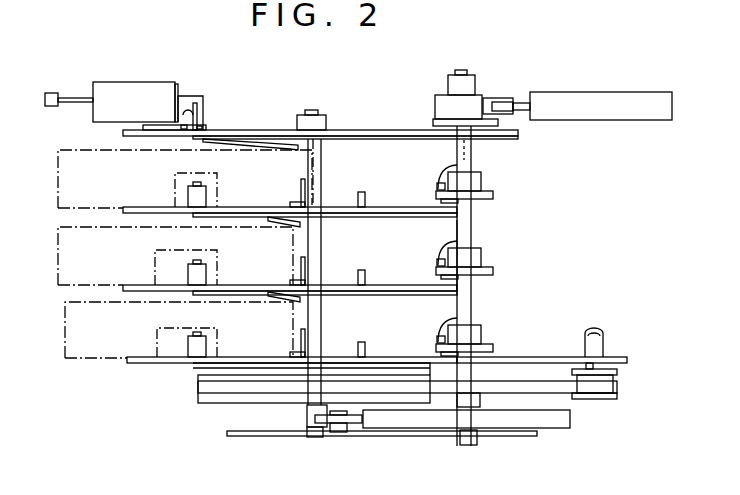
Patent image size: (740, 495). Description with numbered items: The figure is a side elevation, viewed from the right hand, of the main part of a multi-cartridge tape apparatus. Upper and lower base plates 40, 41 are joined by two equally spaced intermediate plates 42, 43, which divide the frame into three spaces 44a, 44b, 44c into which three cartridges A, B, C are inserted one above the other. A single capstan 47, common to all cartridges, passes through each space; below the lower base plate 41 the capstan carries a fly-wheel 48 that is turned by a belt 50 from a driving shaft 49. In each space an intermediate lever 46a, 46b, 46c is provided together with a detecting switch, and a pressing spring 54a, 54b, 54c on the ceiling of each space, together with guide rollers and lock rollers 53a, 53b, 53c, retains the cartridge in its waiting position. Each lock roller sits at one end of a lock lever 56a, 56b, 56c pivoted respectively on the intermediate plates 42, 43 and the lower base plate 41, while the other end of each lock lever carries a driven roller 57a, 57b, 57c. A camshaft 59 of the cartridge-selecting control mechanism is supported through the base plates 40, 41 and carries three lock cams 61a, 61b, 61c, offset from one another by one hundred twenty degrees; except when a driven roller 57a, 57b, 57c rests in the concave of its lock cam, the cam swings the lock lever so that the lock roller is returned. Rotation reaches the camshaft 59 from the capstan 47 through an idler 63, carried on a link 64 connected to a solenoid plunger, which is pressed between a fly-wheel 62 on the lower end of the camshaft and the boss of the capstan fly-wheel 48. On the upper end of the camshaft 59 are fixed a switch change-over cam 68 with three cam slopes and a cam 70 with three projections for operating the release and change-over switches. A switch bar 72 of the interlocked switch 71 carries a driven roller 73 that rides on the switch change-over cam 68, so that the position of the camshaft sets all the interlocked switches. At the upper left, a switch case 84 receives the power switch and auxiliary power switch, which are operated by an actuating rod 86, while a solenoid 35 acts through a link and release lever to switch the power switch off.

The upper base plate 40 is at (376, 130).
The capstan 47 is at (321, 142).
The switch case 84 is at (117, 91).
The actuating rod 86 is at (79, 98).
The solenoid 35 is at (192, 96).
The switch change-over cam 68 is at (438, 98).
The cam 70 is at (440, 123).
The driven roller 73 is at (495, 100).
The switch bar 72 is at (527, 104).
The interlocked switch 71 is at (594, 100).
The intermediate plate 42 is at (443, 188).
The intermediate plate 43 is at (441, 262).
The camshaft 59 is at (472, 148).
The driven roller 57a is at (466, 150).
The driven roller 57b is at (443, 262).
The driven roller 57c is at (443, 340).
The lock cam 61a is at (493, 195).
The lock cam 61b is at (510, 263).
The lock cam 61c is at (487, 347).
The lock lever 56a is at (400, 214).
The lock lever 56b is at (400, 294).
The lock lever 56c is at (400, 368).
The lower base plate 41 is at (538, 357).
The driving shaft 49 is at (600, 338).
The intermediate lever 46a is at (355, 205).
The intermediate lever 46b is at (355, 283).
The intermediate lever 46c is at (355, 356).
The pressing spring 54a is at (282, 151).
The pressing spring 54b is at (284, 226).
The pressing spring 54c is at (282, 303).
The lock roller 53a is at (204, 194).
The lock roller 53b is at (204, 270).
The lock roller 53c is at (222, 341).
The space 44a is at (136, 196).
The space 44b is at (134, 271).
The space 44c is at (134, 345).
The cartridge A is at (58, 166).
The cartridge B is at (58, 241).
The cartridge C is at (65, 318).
The fly-wheel 48 is at (215, 400).
The belt 50 is at (557, 387).
The fly-wheel 62 is at (547, 418).
The idler 63 is at (353, 423).
The link 64 is at (340, 441).